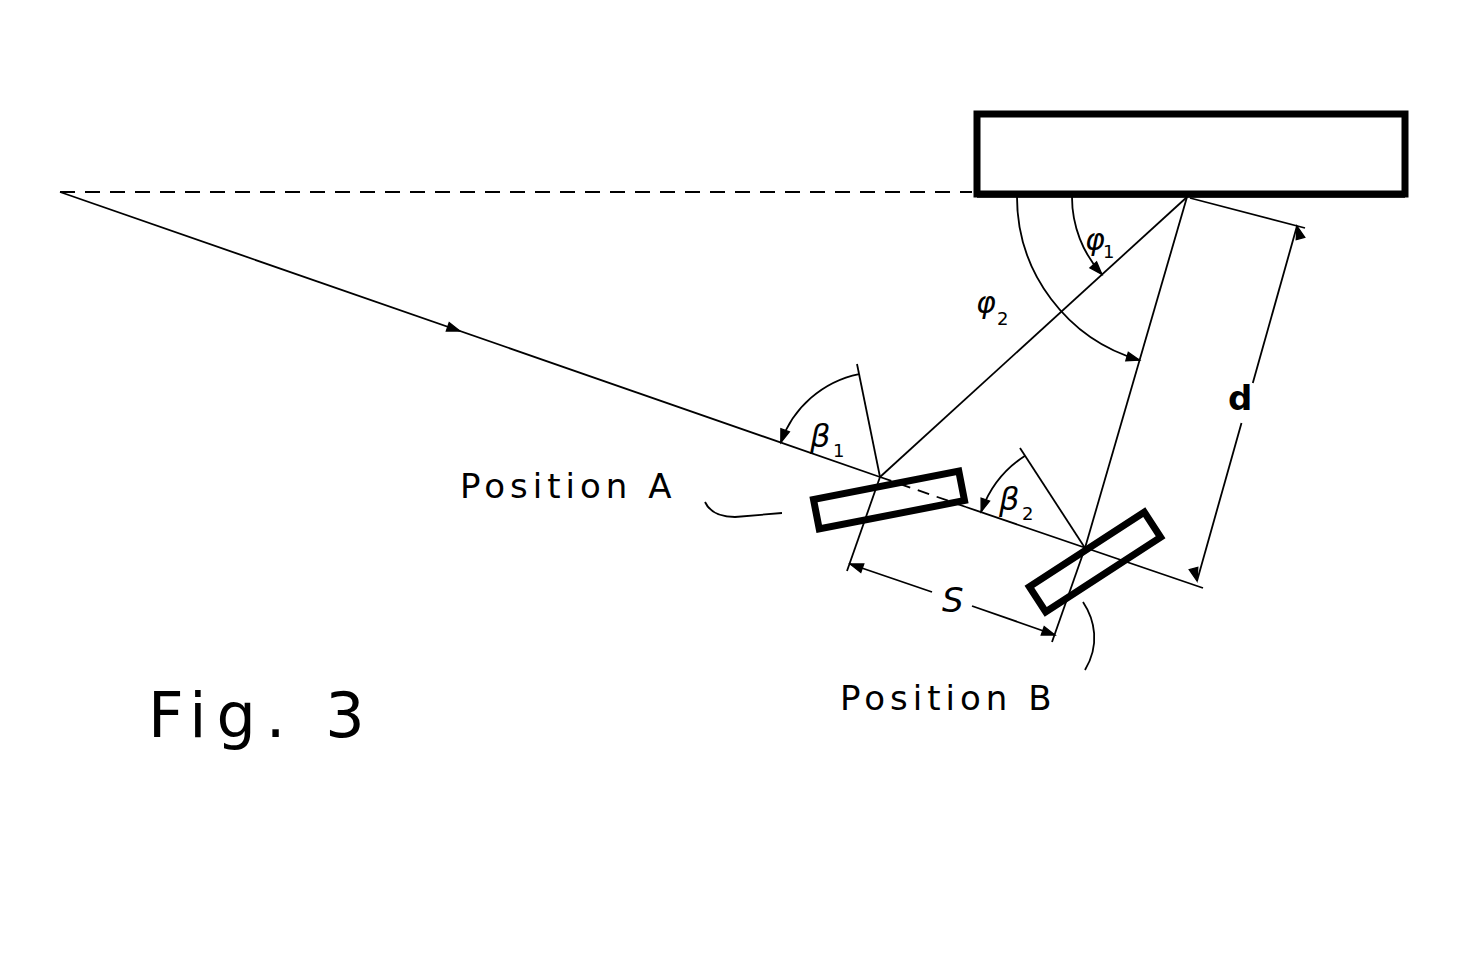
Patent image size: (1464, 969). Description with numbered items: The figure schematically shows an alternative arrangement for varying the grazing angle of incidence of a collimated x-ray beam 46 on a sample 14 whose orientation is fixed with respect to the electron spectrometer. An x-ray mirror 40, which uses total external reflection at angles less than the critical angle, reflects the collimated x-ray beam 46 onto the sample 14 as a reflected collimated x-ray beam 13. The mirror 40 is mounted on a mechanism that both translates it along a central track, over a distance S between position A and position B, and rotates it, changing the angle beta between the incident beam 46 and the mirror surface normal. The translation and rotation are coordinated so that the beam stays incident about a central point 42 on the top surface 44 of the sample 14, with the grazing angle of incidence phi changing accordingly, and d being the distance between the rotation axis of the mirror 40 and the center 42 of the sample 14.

The sample 14 is at (1240, 160).
The top surface 44 is at (1327, 205).
The collimated x-ray beam 46 is at (358, 305).
The collimated x-ray beam 13 is at (993, 387).
The central point 42 is at (1190, 208).
The x-ray mirror 40 is at (1080, 563).